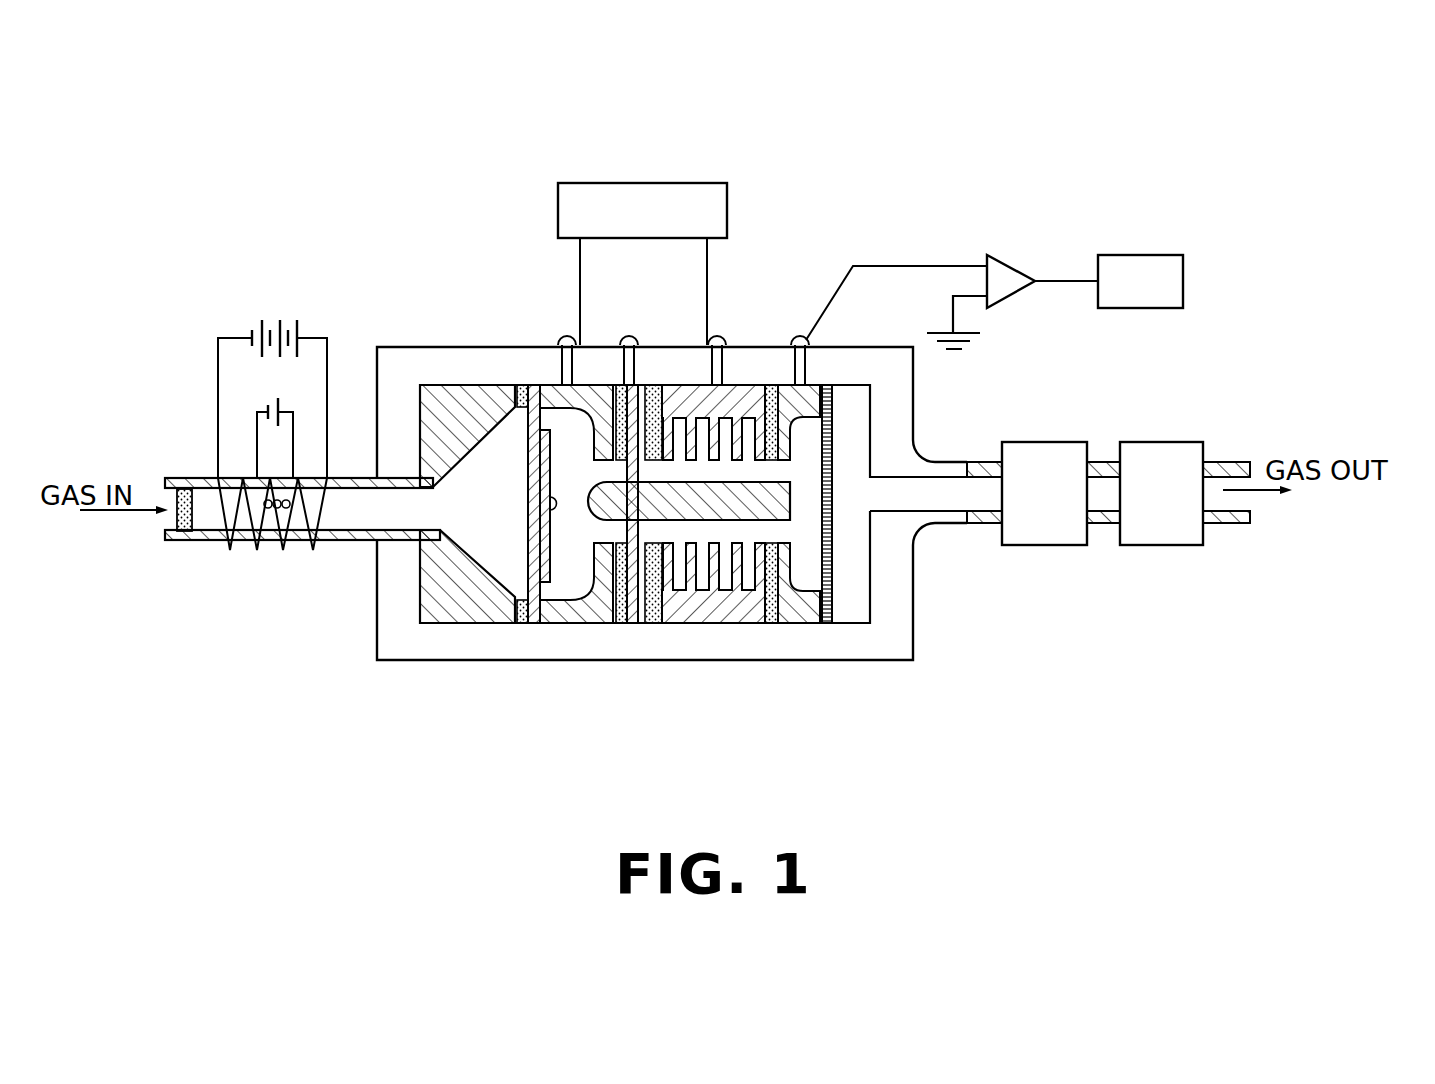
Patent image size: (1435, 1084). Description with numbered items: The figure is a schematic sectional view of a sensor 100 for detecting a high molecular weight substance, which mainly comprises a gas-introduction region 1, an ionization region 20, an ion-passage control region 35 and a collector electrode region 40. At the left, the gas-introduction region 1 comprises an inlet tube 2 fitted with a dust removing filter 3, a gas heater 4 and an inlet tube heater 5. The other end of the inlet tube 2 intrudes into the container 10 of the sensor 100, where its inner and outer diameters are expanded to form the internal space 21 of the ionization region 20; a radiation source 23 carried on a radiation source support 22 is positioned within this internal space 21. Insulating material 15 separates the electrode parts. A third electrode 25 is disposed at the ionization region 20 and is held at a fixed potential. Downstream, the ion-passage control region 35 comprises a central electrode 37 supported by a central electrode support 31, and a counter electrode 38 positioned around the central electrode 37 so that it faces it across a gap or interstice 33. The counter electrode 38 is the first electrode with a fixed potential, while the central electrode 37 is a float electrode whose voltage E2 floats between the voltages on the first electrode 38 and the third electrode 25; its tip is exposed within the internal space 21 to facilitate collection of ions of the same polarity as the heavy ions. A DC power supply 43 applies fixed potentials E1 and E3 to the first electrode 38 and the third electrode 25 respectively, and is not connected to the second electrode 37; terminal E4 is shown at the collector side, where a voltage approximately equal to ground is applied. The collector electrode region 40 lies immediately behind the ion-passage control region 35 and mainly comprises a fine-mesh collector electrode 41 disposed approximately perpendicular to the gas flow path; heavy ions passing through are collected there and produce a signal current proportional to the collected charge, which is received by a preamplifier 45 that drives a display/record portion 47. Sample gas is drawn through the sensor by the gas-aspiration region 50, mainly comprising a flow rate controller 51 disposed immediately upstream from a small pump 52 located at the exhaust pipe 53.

The sensor 100 is at (666, 156).
The gas-introduction region 1 is at (312, 555).
The inlet tube 2 is at (357, 543).
The dust removing filter 3 is at (178, 515).
The gas heater 4 is at (253, 428).
The inlet tube heater 5 is at (217, 427).
The container 10 is at (400, 647).
The insulating material 15 is at (615, 390).
The ionization region 20 is at (518, 561).
The internal space 21 is at (578, 567).
The support for a radiation source 22 is at (527, 481).
The radiation source 23 is at (548, 510).
The third electrode 25 is at (590, 404).
The central electrode support 31 is at (637, 620).
The gap or interstice 33 is at (725, 530).
The ion-passage control region 35 is at (703, 524).
The central electrode 37 is at (617, 513).
The counter electrode 38 is at (688, 613).
The collector electrode region 40 is at (838, 560).
The collector electrode 41 is at (845, 605).
The DC power supply 43 is at (728, 207).
The preamplifier 45 is at (1013, 263).
The display/record portion 47 is at (1146, 255).
The gas-aspiration region 50 is at (1104, 532).
The flow rate controller 51 is at (1055, 442).
The pump 52 is at (1165, 442).
The exhaust pipe 53 is at (993, 525).
The fixed electric potential E1 is at (720, 336).
The floating voltage E2 is at (643, 318).
The fixed electric potential E3 is at (565, 335).
The electrode terminal E4 is at (800, 336).